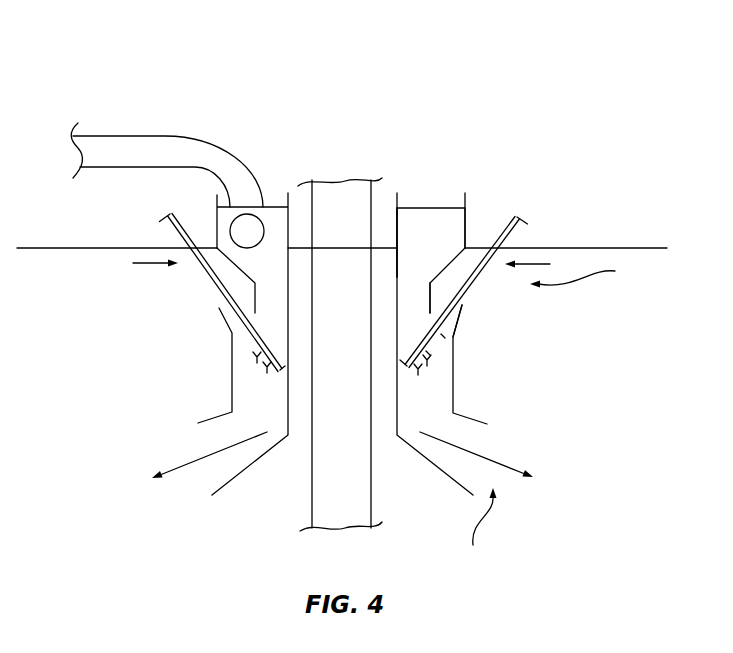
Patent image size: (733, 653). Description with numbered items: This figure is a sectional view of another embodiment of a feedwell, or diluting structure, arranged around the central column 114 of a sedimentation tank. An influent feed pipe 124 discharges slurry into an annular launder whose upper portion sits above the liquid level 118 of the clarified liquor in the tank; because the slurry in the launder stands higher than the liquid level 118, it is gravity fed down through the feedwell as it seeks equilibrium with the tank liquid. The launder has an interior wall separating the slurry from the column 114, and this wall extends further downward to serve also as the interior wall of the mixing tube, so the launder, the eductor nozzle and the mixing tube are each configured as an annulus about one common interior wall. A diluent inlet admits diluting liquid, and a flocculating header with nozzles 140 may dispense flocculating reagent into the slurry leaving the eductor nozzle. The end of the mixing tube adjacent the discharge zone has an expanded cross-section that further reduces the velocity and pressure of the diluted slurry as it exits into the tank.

The column 114 is at (313, 178).
The liquid level 118 is at (598, 248).
The influent feed pipe 124 is at (174, 135).
The nozzles 140 is at (428, 352).